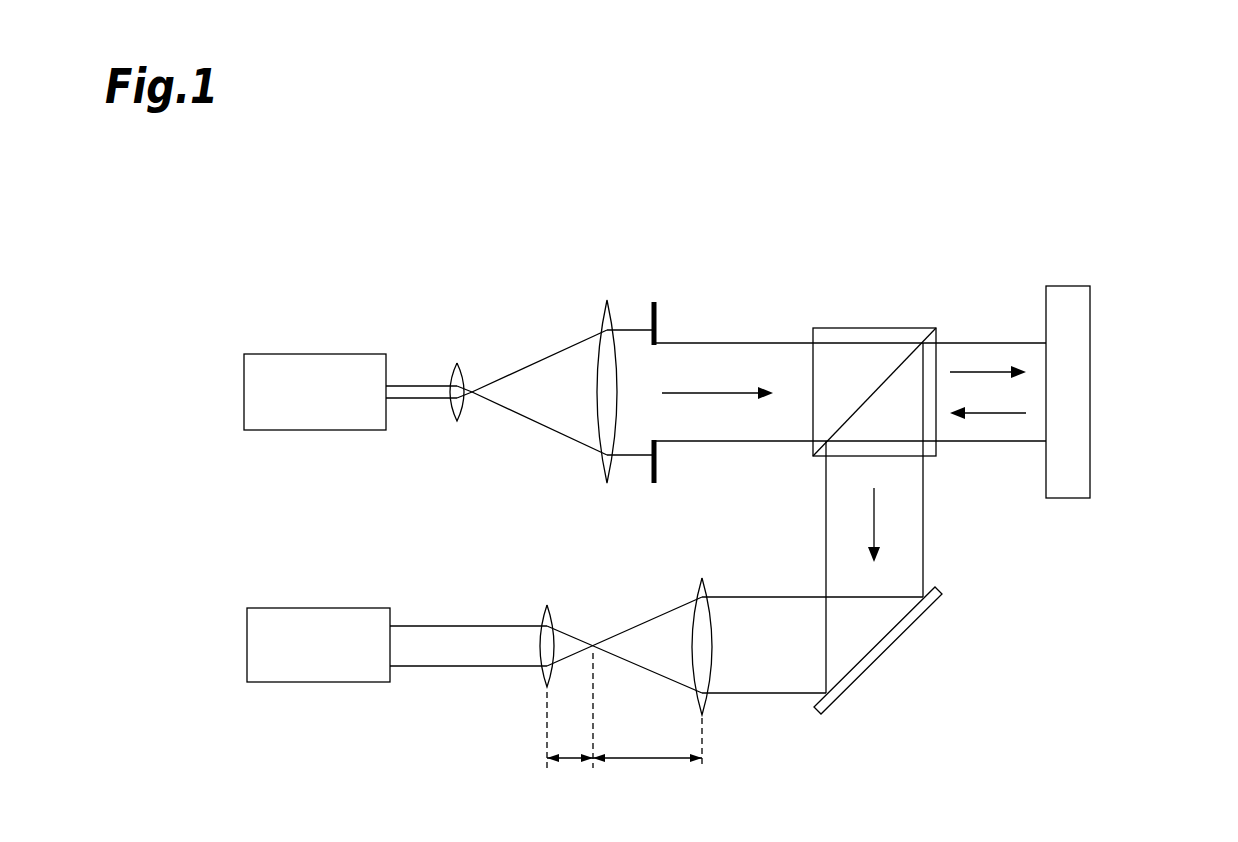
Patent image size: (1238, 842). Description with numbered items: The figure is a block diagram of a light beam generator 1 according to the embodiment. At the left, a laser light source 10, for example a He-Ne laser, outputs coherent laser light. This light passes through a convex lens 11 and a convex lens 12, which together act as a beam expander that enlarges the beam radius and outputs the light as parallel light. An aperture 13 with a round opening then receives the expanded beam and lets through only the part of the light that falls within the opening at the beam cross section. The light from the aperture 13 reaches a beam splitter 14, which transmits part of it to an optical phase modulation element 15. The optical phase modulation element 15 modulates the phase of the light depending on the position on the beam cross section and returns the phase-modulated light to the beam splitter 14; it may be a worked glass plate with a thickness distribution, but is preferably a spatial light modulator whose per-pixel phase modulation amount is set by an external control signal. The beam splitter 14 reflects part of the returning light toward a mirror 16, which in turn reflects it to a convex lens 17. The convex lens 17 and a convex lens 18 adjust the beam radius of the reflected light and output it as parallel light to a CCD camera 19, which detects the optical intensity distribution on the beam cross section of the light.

The light beam generator 1 is at (1143, 210).
The laser light source 10 is at (312, 430).
The convex lens 11 is at (458, 364).
The convex lens 12 is at (607, 302).
The aperture 13 is at (657, 318).
The beam splitter 14 is at (876, 328).
The optical phase modulation element 15 is at (1073, 286).
The mirror 16 is at (843, 695).
The convex lens 17 is at (702, 578).
The convex lens 18 is at (548, 605).
The CCD camera 19 is at (313, 682).